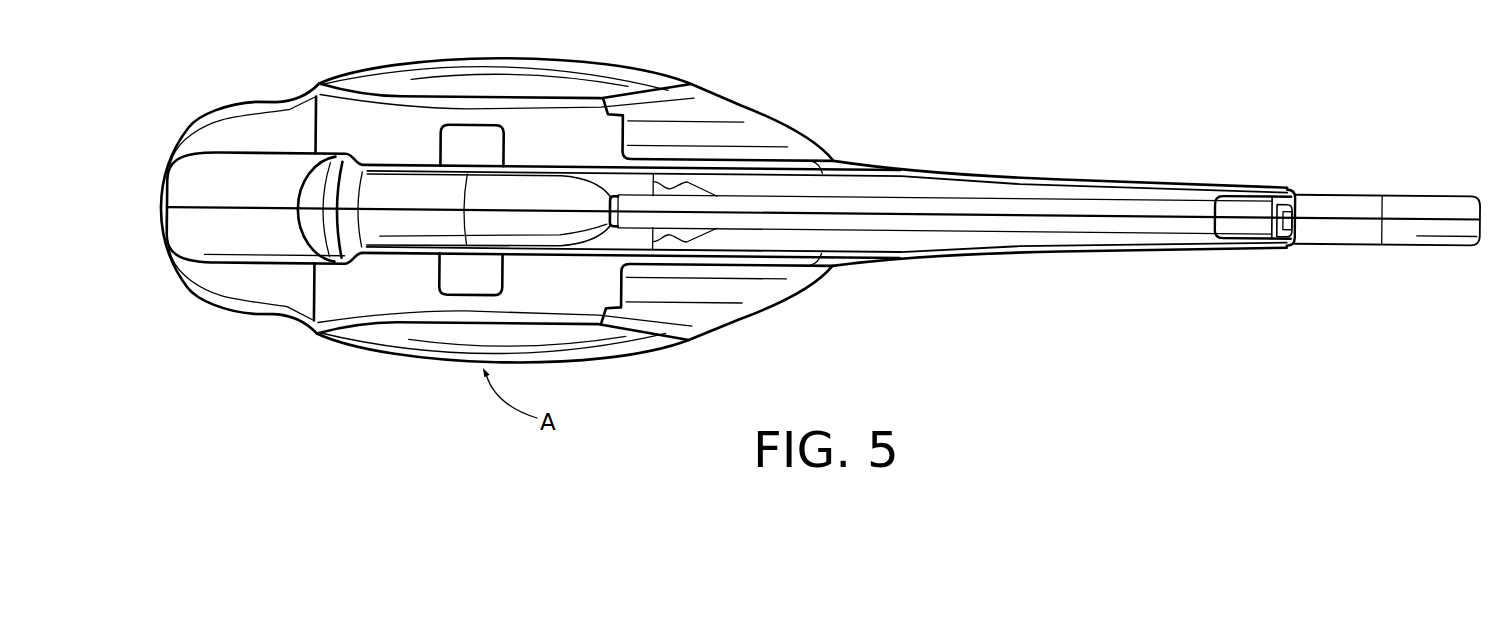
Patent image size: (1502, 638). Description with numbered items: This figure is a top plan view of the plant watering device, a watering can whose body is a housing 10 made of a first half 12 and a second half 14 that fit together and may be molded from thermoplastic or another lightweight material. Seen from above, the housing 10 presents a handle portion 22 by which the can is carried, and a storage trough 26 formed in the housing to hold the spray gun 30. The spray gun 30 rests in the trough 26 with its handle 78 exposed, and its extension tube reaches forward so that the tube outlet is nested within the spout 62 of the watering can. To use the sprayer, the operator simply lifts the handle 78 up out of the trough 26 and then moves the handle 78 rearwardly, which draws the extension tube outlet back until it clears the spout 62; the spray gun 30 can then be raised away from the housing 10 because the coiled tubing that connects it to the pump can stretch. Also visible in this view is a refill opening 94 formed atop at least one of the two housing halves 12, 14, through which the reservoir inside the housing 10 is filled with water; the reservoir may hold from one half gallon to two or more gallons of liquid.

The housing 10 is at (871, 160).
The first half 12 is at (261, 238).
The second half 14 is at (235, 177).
The handle portion 22 is at (207, 240).
The storage trough 26 is at (1010, 180).
The spray gun 30 is at (422, 176).
The spout 62 is at (1437, 230).
The handle 78 is at (410, 230).
The refill opening 94 is at (477, 130).